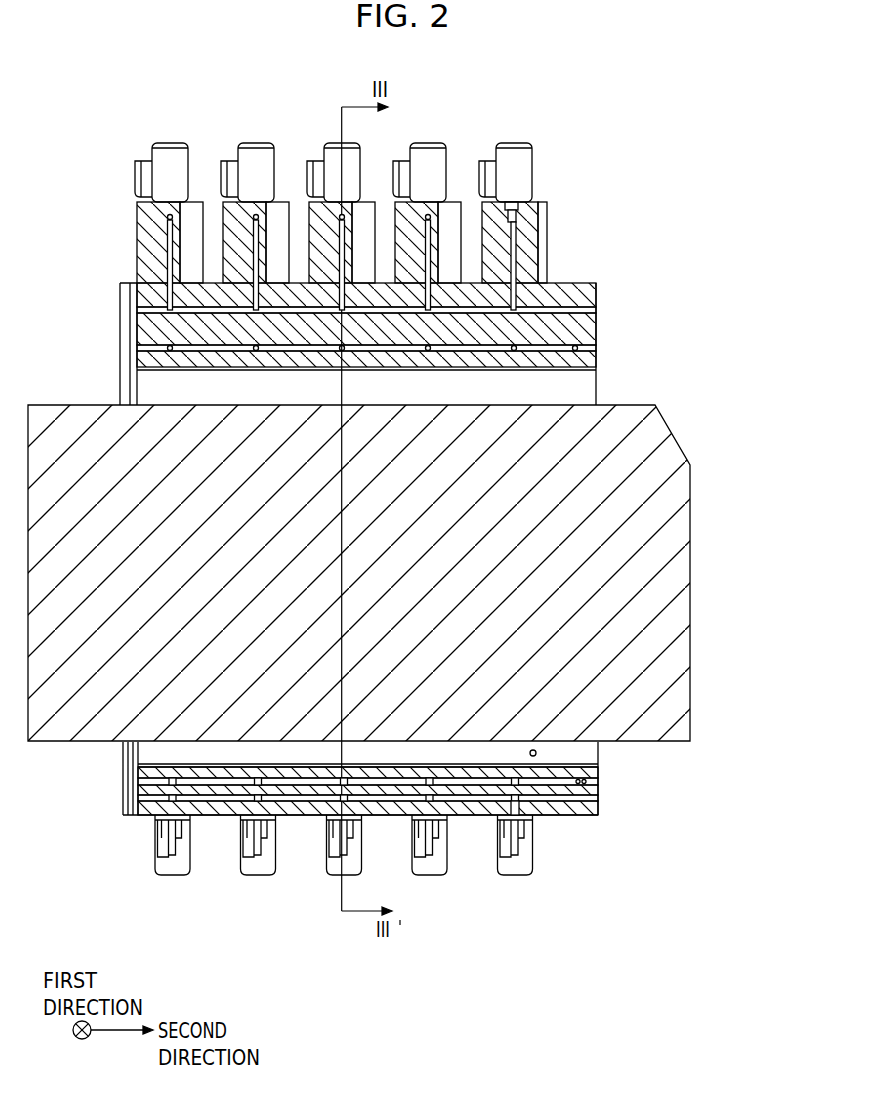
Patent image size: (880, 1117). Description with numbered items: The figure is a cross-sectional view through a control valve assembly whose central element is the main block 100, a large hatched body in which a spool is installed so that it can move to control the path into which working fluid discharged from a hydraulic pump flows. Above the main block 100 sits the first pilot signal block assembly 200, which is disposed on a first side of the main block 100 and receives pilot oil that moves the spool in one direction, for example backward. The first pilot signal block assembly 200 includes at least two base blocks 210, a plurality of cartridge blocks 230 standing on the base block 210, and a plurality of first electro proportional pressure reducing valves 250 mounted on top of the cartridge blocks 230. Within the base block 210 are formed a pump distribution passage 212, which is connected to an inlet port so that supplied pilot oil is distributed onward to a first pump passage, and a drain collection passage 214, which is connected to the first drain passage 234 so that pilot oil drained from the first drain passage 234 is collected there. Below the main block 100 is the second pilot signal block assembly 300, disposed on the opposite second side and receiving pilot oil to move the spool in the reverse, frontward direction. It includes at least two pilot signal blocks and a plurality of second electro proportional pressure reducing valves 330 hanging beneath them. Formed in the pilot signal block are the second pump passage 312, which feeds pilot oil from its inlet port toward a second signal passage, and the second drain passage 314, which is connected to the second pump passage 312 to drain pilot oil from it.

The main block 100 is at (696, 515).
The first pilot signal block assembly 200 is at (623, 214).
The base block 210 is at (590, 332).
The pump distribution passage 212 is at (590, 350).
The drain collection passage 214 is at (590, 308).
The cartridge block 230 is at (532, 262).
The first drain passage 234 is at (513, 228).
The first electro proportional pressure reducing valve 250 is at (517, 177).
The second pilot signal block assembly 300 is at (600, 874).
The second pump passage 312 is at (587, 772).
The second drain passage 314 is at (587, 795).
The second electro proportional pressure reducing valve 330 is at (587, 809).